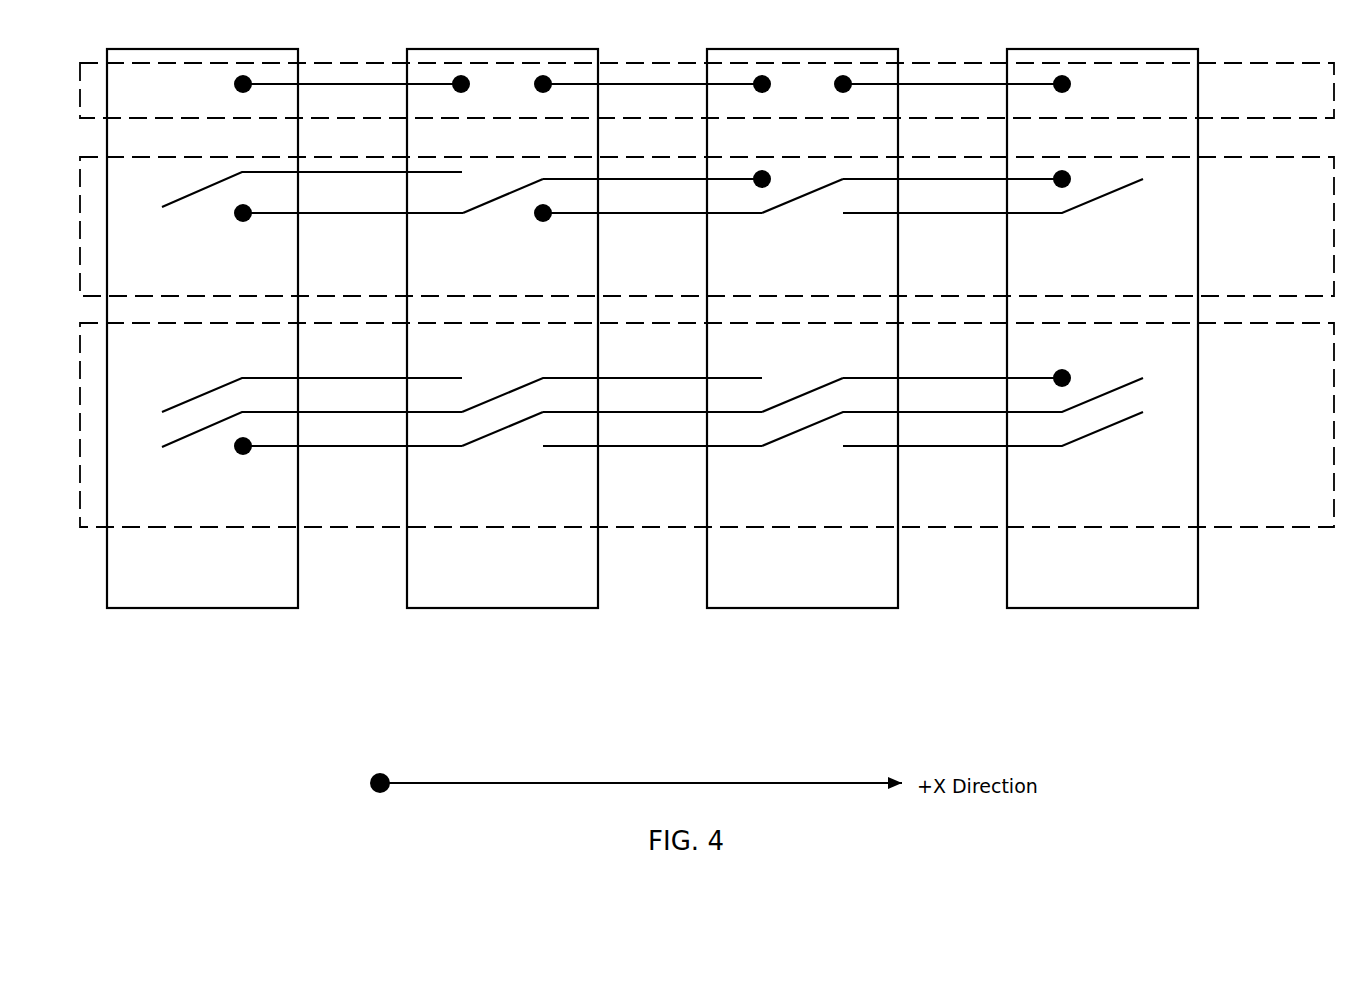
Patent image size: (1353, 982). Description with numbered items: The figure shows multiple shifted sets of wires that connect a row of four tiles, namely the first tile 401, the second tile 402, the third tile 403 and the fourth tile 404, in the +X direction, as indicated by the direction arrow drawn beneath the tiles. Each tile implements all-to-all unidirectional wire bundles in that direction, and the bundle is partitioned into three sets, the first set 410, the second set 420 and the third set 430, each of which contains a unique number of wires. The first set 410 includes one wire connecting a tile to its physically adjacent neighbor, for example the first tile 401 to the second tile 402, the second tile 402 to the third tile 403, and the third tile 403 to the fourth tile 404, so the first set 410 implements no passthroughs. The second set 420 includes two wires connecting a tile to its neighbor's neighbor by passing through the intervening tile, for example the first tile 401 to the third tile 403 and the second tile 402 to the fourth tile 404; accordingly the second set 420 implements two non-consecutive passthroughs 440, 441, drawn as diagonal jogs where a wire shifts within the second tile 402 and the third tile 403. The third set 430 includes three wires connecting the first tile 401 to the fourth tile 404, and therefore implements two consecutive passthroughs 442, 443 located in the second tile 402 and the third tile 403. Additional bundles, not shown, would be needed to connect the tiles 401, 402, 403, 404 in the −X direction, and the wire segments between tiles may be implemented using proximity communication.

The Tile 1 401 is at (219, 627).
The Tile 2 402 is at (496, 629).
The Tile 3 403 is at (781, 626).
The Tile 4 404 is at (1081, 626).
The Set 1 410 is at (707, 90).
The Set 2 420 is at (707, 226).
The Set 3 430 is at (707, 425).
The passthrough 440 is at (479, 209).
The passthrough 441 is at (817, 240).
The passthrough 442 is at (506, 434).
The passthrough 443 is at (809, 392).